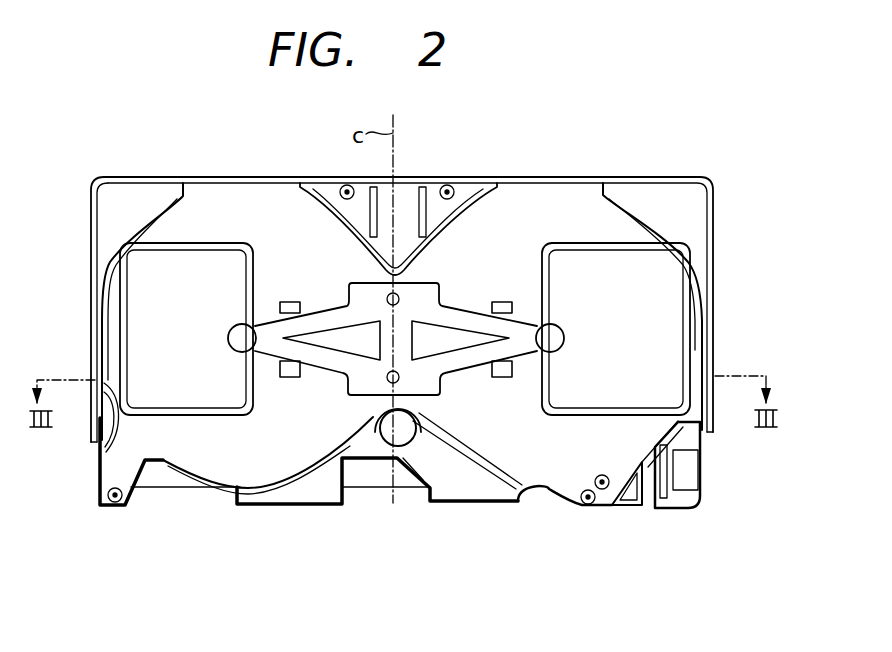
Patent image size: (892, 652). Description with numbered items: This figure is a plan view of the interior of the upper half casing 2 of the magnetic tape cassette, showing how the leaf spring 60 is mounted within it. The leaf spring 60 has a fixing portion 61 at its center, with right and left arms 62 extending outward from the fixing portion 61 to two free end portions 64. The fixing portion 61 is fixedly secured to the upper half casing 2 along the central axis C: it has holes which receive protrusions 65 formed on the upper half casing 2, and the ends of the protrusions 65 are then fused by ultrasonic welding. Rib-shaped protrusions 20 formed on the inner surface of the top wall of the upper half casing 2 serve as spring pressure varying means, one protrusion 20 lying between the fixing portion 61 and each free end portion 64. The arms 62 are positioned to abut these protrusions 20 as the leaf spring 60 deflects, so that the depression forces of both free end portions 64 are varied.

The upper half casing 2 is at (556, 168).
The rib-shaped protrusions 20 is at (288, 380).
The leaf spring 60 is at (472, 382).
The fixing portion 61 is at (401, 333).
The arms 62 is at (320, 313).
The free end portions 64 is at (233, 333).
The protrusions 65 is at (390, 383).